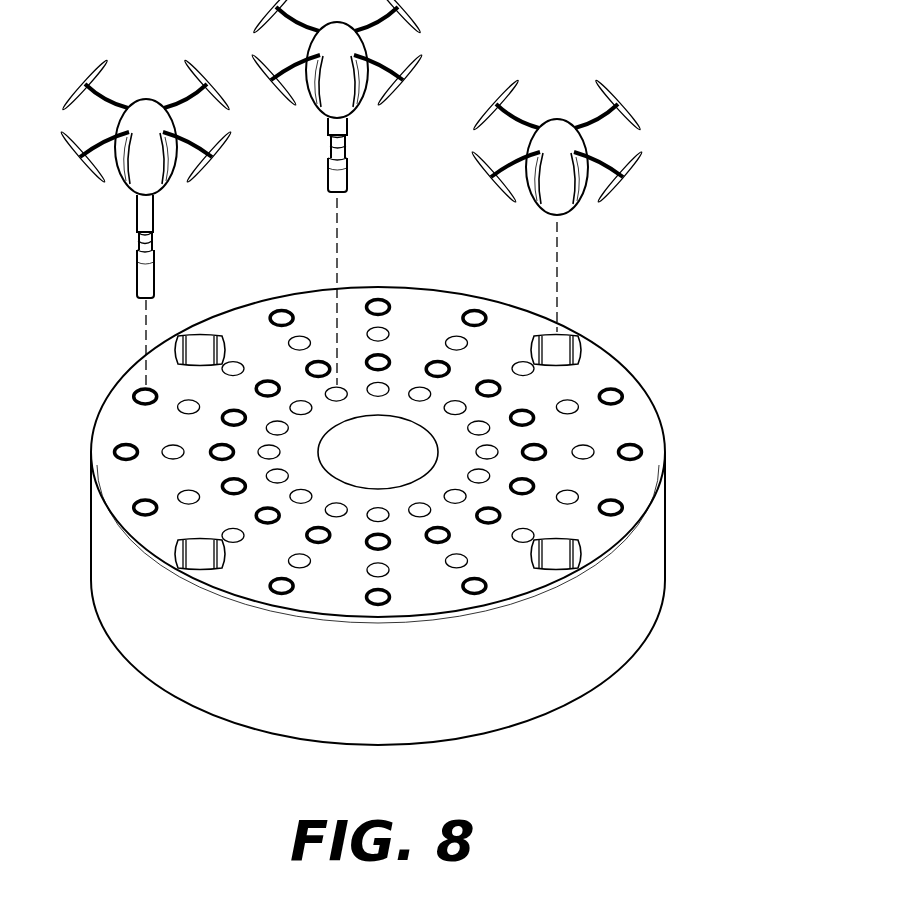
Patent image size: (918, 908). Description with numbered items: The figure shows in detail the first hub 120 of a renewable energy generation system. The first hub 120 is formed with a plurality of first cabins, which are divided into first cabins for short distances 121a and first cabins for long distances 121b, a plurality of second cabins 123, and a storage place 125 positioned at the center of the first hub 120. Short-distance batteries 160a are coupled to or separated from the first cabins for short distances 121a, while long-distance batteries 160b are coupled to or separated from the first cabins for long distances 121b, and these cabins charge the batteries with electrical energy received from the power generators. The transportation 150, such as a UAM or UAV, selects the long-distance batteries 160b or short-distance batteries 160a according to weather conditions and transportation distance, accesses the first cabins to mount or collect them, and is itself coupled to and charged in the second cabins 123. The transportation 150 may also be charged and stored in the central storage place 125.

The first hub 120 is at (662, 540).
The first cabin for short distances 121a is at (136, 391).
The first cabin for long distances 121b is at (340, 390).
The second cabin 123 is at (565, 338).
The storage place 125 is at (402, 438).
The transportation 150 is at (557, 118).
The short-distance battery 160a is at (152, 272).
The long-distance battery 160b is at (349, 175).